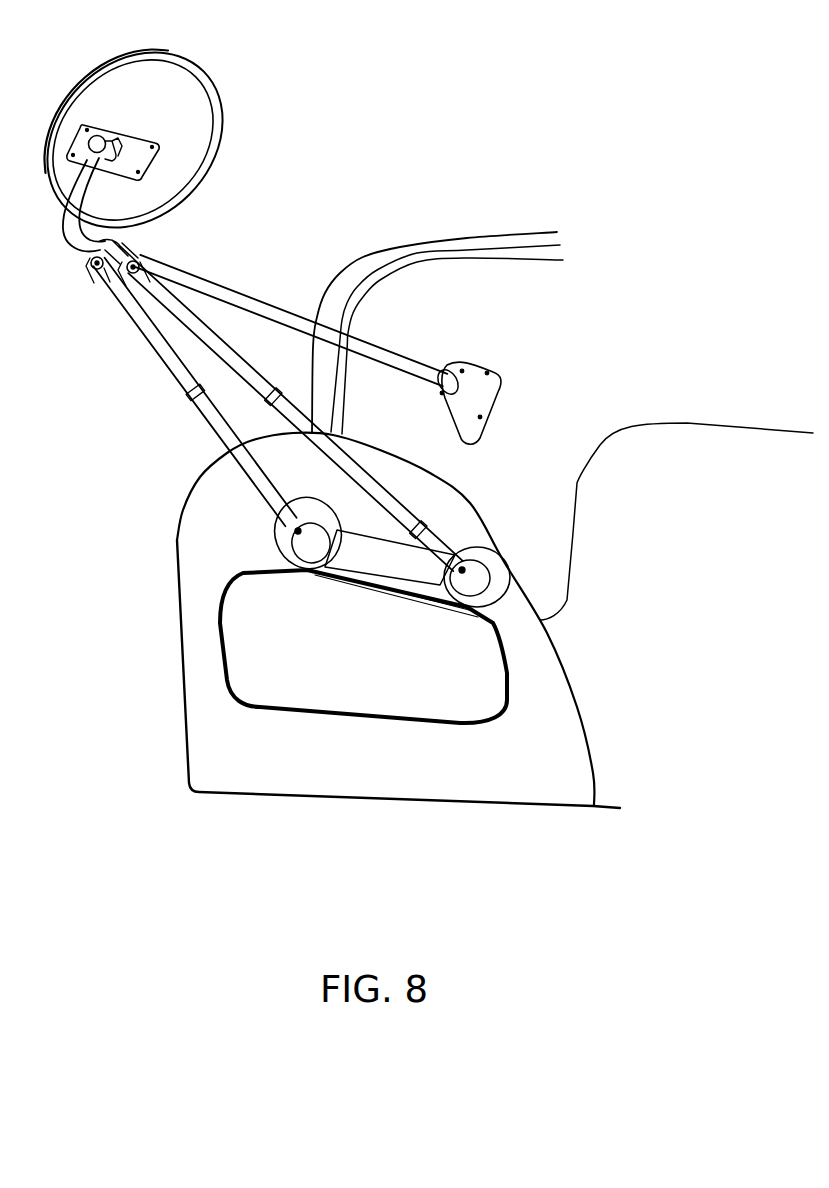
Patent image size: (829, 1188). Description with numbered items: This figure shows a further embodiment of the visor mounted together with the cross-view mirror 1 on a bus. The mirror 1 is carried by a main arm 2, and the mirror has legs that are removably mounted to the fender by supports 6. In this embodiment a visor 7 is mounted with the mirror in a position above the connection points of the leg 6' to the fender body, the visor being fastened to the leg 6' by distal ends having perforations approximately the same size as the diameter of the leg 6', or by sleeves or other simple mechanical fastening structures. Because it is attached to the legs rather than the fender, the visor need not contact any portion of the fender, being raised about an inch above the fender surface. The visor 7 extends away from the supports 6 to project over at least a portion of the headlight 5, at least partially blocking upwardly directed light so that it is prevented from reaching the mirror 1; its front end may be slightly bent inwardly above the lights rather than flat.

The mirror 1 is at (236, 124).
The main arm 2 is at (283, 316).
The headlight 5 is at (460, 692).
The supports 6 is at (481, 547).
The leg 6' is at (297, 413).
The visor 7 is at (393, 570).